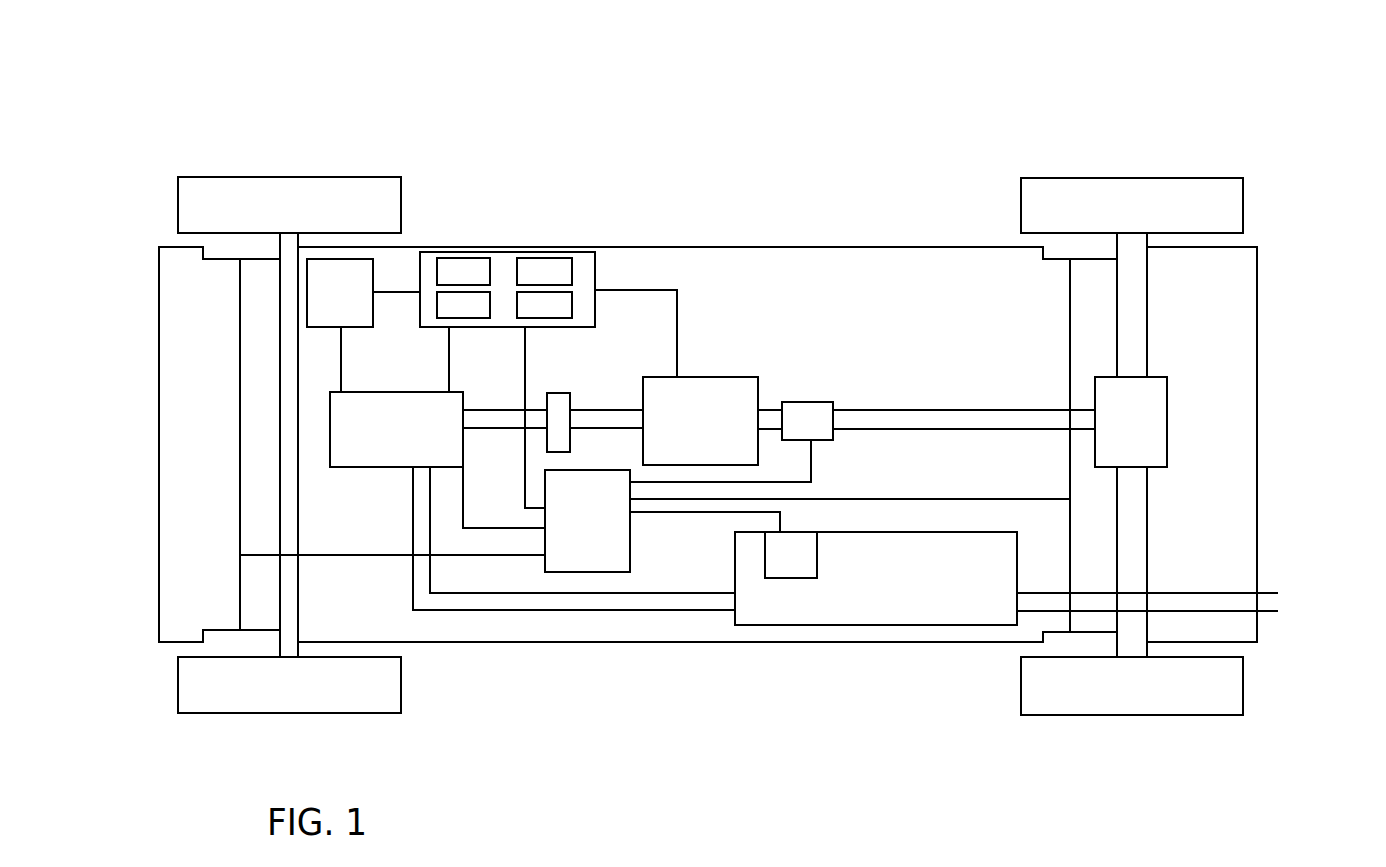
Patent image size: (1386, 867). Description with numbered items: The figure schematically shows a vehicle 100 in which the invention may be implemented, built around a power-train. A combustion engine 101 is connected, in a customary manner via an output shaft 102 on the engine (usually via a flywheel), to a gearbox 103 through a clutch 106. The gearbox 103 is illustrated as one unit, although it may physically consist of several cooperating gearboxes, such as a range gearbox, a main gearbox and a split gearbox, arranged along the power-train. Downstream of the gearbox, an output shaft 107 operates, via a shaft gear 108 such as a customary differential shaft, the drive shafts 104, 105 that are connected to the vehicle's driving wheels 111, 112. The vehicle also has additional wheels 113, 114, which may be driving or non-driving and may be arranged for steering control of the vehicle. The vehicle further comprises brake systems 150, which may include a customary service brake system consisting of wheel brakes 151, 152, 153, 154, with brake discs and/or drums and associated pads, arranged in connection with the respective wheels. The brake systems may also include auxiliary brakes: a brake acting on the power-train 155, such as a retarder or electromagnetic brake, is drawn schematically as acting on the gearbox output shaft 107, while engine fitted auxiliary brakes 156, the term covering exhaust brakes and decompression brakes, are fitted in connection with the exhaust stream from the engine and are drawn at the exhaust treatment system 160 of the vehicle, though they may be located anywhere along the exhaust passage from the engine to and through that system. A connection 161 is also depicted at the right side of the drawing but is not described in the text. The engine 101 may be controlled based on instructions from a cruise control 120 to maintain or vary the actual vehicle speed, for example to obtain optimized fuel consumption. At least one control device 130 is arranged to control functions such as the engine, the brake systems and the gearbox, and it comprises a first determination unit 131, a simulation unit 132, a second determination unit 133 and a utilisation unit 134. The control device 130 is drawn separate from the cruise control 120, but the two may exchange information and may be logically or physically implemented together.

The vehicle 100 is at (615, 75).
The combustion engine 101 is at (378, 448).
The output shaft 102 is at (488, 404).
The gearbox 103 is at (702, 385).
The drive shaft 104 is at (1135, 302).
The drive shaft 105 is at (1140, 570).
The clutch 106 is at (556, 398).
The output shaft 107 is at (866, 420).
The shaft gear 108 is at (1163, 418).
The driving wheel 111 is at (1243, 685).
The driving wheel 112 is at (1243, 195).
The additional wheel 113 is at (401, 190).
The additional wheel 114 is at (401, 683).
The cruise control 120 is at (363, 325).
The control device 130 is at (590, 318).
The first determination unit 131 is at (463, 271).
The simulation unit 132 is at (544, 271).
The second determination unit 133 is at (463, 305).
The utilisation unit 134 is at (544, 305).
The brake systems 150 is at (807, 521).
The wheel brake 151 is at (1056, 640).
The wheel brake 152 is at (1068, 245).
The wheel brake 153 is at (240, 241).
The wheel brake 154 is at (213, 640).
The brake acting on the power-train 155 is at (808, 408).
The engine fitted auxiliary brakes 156 is at (785, 567).
The exhaust treatment system 160 is at (893, 617).
The charging connector 161 is at (1276, 608).